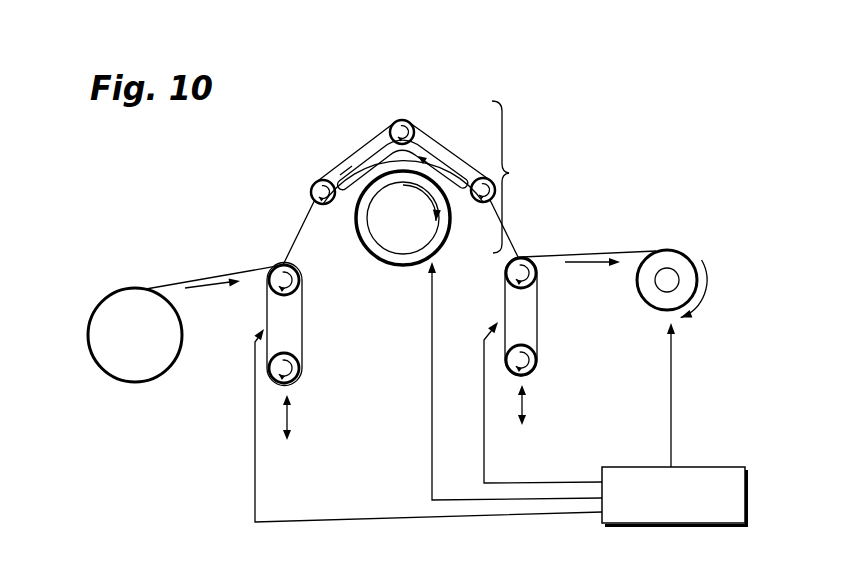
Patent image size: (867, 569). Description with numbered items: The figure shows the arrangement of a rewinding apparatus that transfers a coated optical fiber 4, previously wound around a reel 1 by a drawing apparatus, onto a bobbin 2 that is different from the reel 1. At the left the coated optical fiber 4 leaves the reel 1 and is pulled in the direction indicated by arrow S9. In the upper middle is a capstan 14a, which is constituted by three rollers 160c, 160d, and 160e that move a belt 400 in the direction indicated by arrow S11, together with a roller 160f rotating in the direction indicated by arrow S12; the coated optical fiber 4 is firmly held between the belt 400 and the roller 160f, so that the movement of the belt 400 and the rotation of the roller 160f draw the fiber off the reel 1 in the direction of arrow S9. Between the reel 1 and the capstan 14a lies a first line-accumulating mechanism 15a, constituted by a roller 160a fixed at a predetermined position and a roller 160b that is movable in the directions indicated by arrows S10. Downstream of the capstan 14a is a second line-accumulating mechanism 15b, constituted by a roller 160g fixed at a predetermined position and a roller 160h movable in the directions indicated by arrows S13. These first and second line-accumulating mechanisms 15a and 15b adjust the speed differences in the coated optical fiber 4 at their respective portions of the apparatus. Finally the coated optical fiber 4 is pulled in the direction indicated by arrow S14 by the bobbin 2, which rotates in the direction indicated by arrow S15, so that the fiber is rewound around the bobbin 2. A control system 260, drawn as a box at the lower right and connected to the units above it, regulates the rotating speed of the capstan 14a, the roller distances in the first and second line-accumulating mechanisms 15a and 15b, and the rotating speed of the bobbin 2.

The reel 1 is at (113, 293).
The bobbin 2 is at (684, 261).
The coated optical fiber 4 is at (206, 277).
The belt 400 is at (358, 150).
The capstan 14a is at (519, 177).
The first line-accumulating mechanism 15a is at (350, 263).
The second line-accumulating mechanism 15b is at (587, 277).
The roller 160a is at (299, 281).
The roller 160b is at (299, 370).
The roller 160c is at (312, 186).
The roller 160d is at (406, 121).
The roller 160e is at (482, 177).
The roller 160f is at (400, 265).
The roller 160g is at (537, 280).
The roller 160h is at (537, 366).
The control system 260 is at (501, 394).
The arrow S9 is at (212, 306).
The arrows S10 is at (289, 415).
The arrow S11 is at (342, 162).
The arrow S12 is at (400, 183).
The arrows S13 is at (524, 405).
The arrow S14 is at (578, 257).
The arrow S15 is at (706, 302).